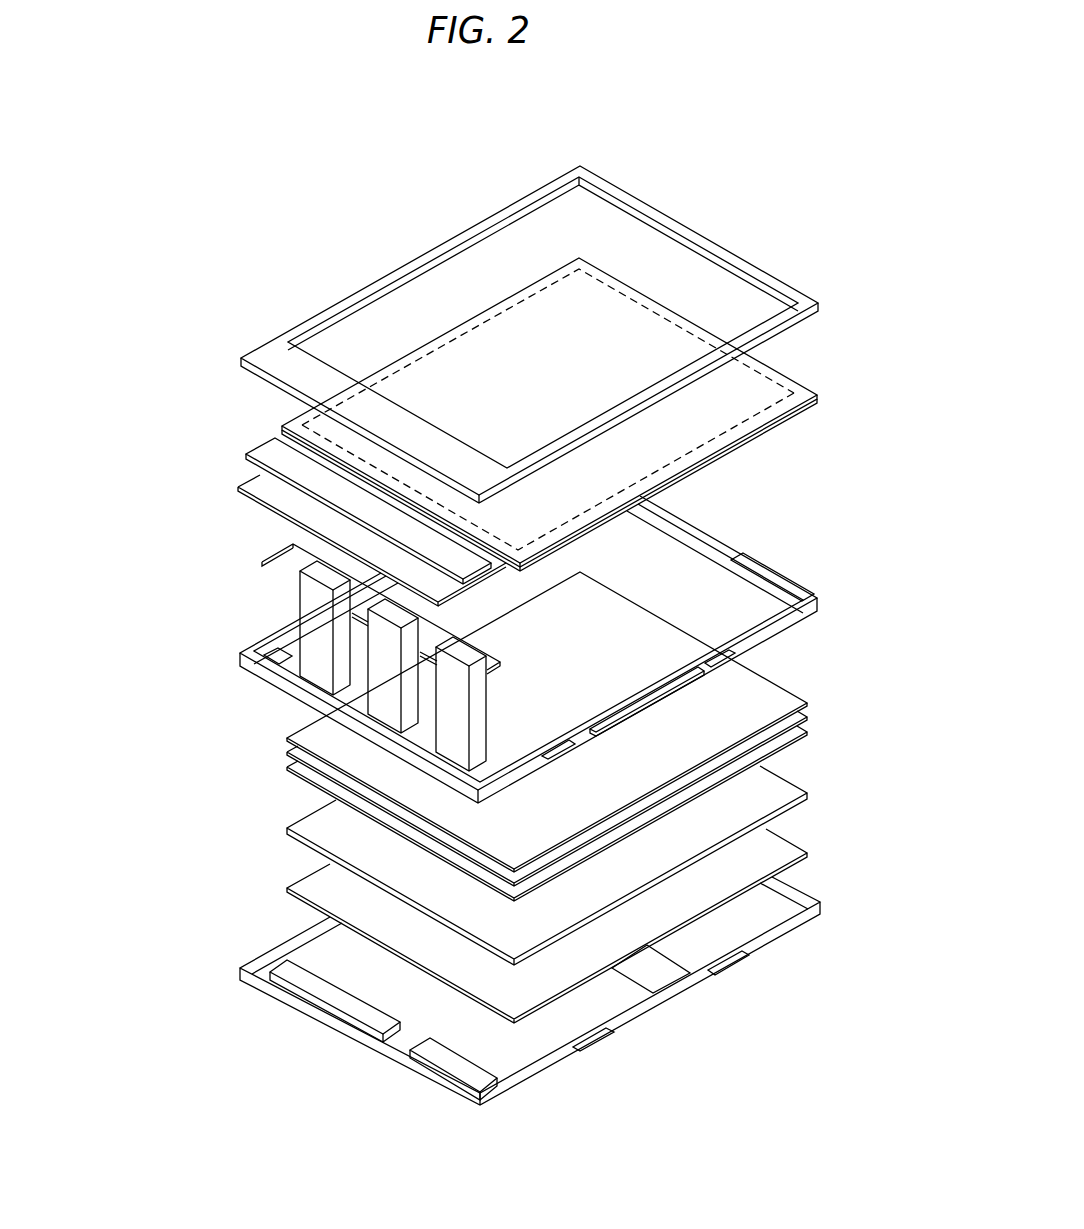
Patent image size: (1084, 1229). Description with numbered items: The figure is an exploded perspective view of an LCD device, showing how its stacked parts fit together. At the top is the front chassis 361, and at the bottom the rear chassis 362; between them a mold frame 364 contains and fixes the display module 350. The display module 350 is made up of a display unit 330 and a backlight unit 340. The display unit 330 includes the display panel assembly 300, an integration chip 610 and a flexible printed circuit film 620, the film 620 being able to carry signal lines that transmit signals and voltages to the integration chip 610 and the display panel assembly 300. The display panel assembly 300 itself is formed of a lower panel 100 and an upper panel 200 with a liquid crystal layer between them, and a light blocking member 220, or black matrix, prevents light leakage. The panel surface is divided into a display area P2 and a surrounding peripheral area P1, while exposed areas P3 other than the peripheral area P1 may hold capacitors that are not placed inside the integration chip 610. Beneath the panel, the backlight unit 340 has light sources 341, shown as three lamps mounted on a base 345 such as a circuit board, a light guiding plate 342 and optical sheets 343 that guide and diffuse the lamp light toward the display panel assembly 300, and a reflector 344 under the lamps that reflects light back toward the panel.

The lower panel 100 is at (822, 407).
The upper panel 200 is at (822, 398).
The light blocking member 220 is at (700, 458).
The display panel assembly 300 is at (895, 378).
The display unit 330 is at (224, 447).
The backlight unit 340 is at (210, 583).
The light sources 341 is at (300, 590).
The light guiding plate 342 is at (288, 835).
The optical sheets 343 is at (280, 733).
The reflector 344 is at (288, 890).
The base 345 is at (283, 574).
The display module 350 is at (133, 426).
The front chassis 361 is at (790, 290).
The rear chassis 362 is at (252, 964).
The mold frame 364 is at (247, 652).
The integration chip 610 is at (275, 445).
The flexible printed circuit film 620 is at (245, 493).
The peripheral area P1 is at (772, 366).
The display area P2 is at (708, 408).
The exposed areas P3 is at (258, 461).